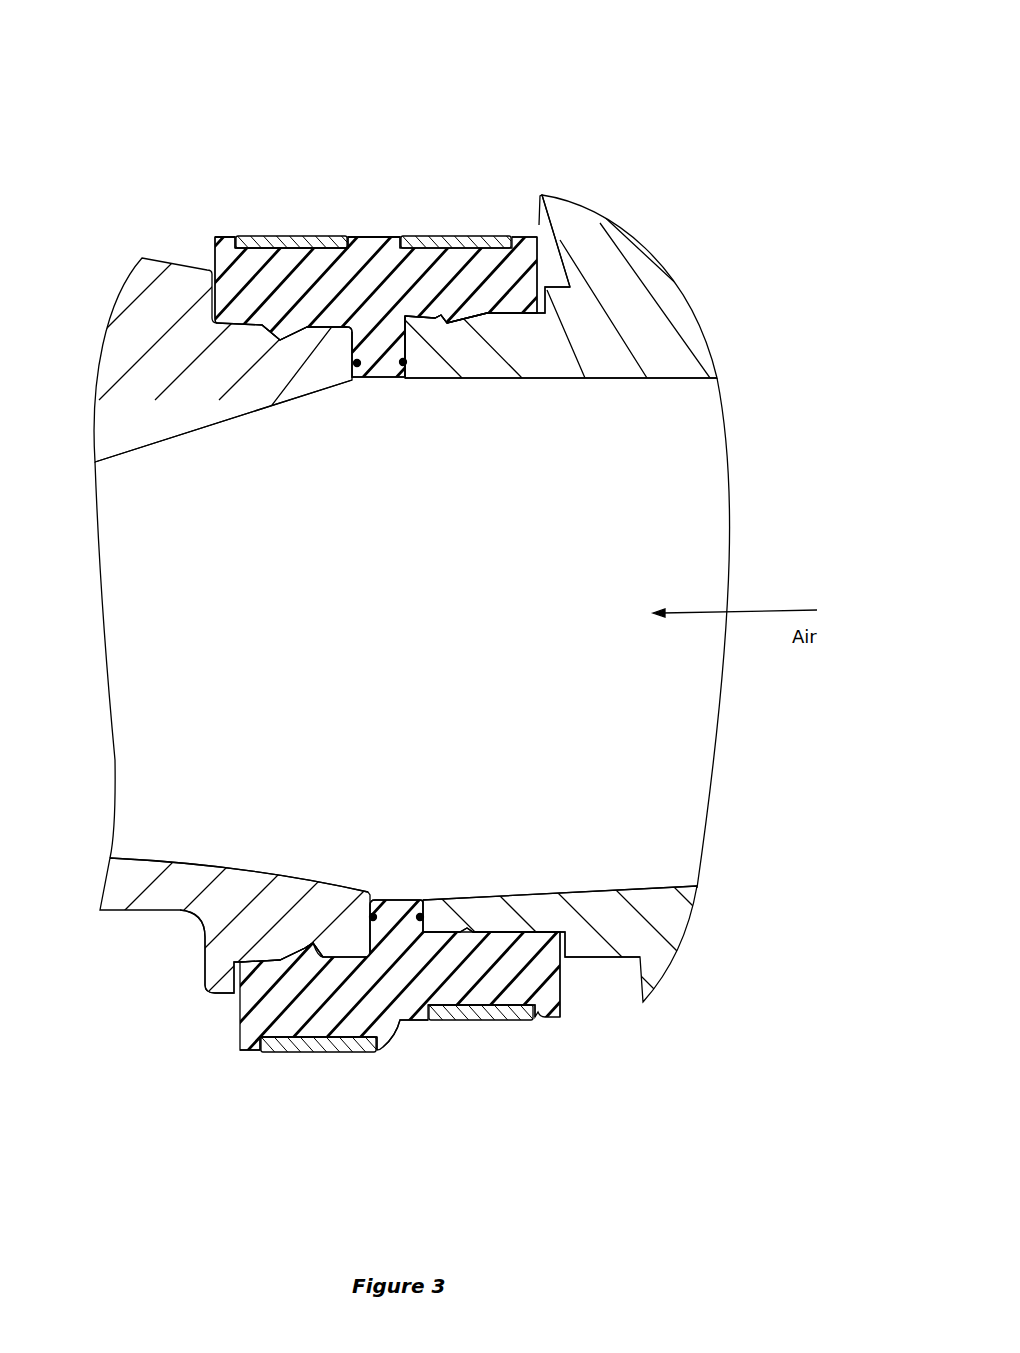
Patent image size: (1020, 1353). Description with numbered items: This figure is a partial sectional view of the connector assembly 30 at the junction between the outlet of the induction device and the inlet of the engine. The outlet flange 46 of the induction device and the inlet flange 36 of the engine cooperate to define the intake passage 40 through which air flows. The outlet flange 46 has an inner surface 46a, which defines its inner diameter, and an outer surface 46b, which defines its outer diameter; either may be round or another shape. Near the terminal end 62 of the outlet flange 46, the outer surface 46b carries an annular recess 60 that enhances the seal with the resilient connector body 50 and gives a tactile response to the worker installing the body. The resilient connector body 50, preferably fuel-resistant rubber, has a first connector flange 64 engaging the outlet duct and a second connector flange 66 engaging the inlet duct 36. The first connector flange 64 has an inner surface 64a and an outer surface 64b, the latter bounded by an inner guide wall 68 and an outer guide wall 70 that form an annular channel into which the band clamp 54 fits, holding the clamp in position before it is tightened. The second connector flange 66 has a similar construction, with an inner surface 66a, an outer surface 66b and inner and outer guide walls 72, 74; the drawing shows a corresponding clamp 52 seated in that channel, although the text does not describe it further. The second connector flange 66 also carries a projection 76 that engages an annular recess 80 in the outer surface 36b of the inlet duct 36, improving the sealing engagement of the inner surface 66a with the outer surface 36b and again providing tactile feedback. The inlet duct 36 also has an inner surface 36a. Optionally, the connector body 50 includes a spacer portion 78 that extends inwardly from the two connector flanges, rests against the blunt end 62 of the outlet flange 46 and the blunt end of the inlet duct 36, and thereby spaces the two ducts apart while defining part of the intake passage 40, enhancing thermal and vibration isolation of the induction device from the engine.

The connector assembly 30 is at (455, 155).
The inlet flange 36 is at (114, 313).
The inner surface 36a is at (229, 427).
The outer surface 36b is at (250, 948).
The intake passage 40 is at (684, 379).
The outlet flange 46 is at (670, 267).
The inner surface 46a is at (475, 380).
The outer surface 46b is at (515, 320).
The resilient connector body 50 is at (221, 236).
The first wear strip 52 is at (268, 236).
The band clamp 54 is at (459, 234).
The annular recess 60 is at (449, 322).
The terminal end 62 is at (405, 352).
The first connector flange 64 is at (542, 194).
The inner surface 64a is at (437, 300).
The outer surface 64b is at (512, 1018).
The second connector flange 66 is at (213, 266).
The inner surface 66a is at (327, 329).
The outer surface 66b is at (322, 232).
The inner guide wall 68 is at (394, 234).
The outer guide wall 70 is at (546, 258).
The inner guide wall 72 is at (357, 234).
The outer guide wall 74 is at (233, 236).
The projection 76 is at (280, 342).
The spacer portion 78 is at (380, 381).
The annular recess 80 is at (317, 931).